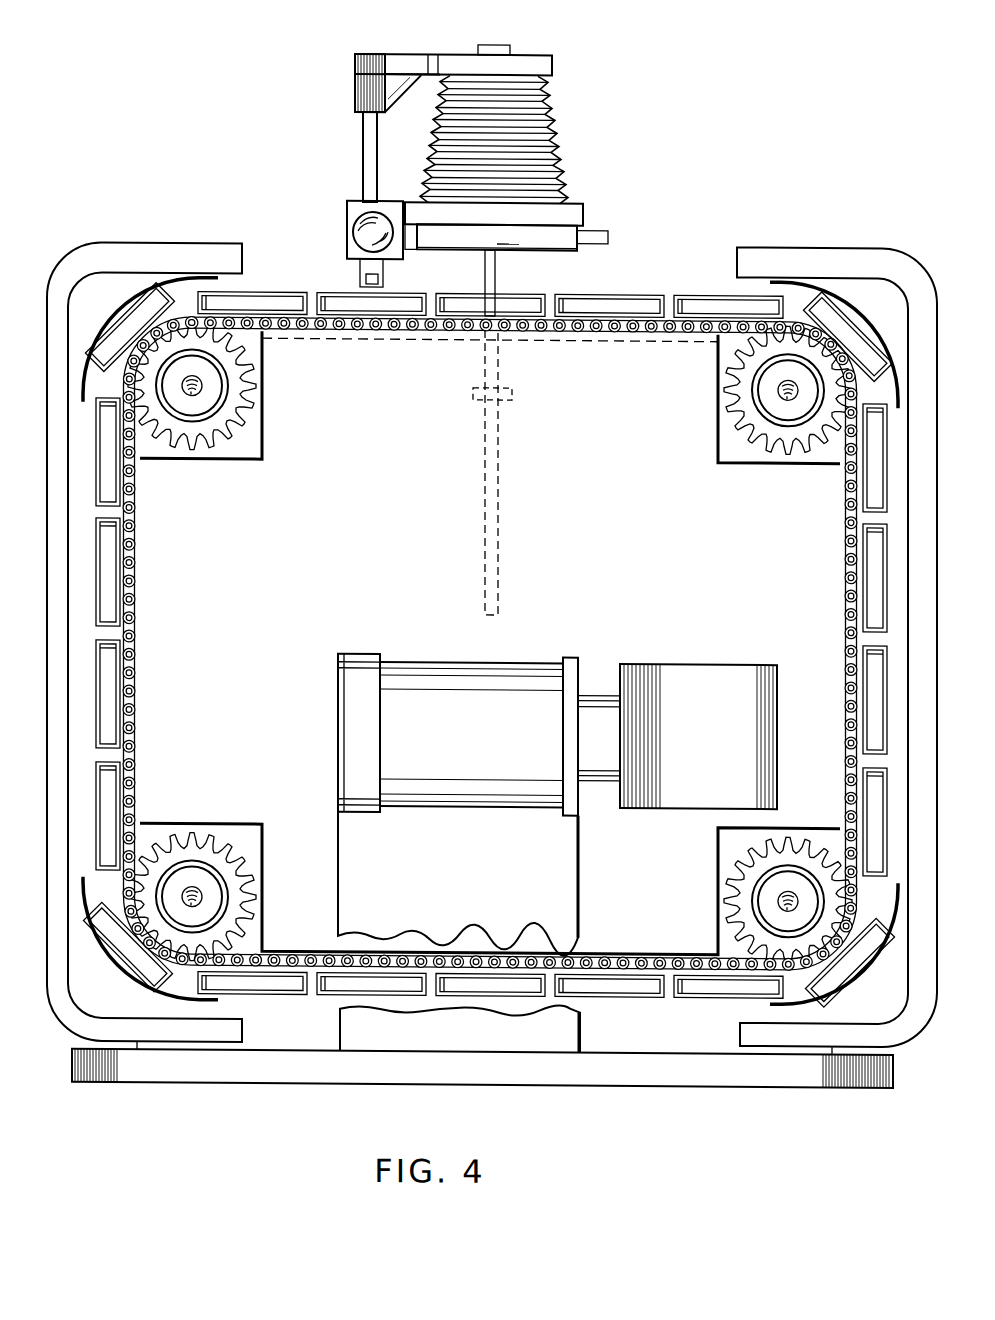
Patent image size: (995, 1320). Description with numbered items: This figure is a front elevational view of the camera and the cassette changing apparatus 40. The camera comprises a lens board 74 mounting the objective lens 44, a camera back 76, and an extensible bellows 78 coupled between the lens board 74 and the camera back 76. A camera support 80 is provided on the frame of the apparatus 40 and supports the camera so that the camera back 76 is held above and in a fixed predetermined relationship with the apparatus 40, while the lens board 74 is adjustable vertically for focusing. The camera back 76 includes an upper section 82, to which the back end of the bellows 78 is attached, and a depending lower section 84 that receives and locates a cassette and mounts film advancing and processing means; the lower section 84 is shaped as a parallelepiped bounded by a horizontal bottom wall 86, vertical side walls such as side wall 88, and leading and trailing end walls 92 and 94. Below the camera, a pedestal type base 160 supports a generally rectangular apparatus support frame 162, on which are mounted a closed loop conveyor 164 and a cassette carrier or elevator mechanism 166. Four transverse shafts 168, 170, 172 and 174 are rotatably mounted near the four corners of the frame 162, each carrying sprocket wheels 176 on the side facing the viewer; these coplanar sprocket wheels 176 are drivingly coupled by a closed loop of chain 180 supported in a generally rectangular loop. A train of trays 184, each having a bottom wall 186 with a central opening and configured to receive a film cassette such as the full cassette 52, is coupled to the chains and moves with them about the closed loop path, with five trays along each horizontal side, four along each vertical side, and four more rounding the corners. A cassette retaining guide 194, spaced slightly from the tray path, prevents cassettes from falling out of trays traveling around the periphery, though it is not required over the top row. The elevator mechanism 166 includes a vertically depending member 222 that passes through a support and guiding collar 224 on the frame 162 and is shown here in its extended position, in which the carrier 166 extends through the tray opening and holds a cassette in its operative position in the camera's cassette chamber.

The cassette changing apparatus 40 is at (500, 632).
The objective lens 44 is at (494, 45).
The full cassette 52 is at (345, 302).
The lens board 74 is at (552, 62).
The camera back 76 is at (527, 227).
The extensible bellows 78 is at (555, 153).
The camera support 80 is at (347, 207).
The upper section 82 is at (584, 206).
The lower section 84 is at (575, 250).
The bottom wall 86 is at (545, 250).
The side wall 88 is at (508, 236).
The leading end wall 92 is at (588, 243).
The trailing end wall 94 is at (409, 238).
The pedestal type base 160 is at (722, 1080).
The apparatus support frame 162 is at (914, 1022).
The closed loop conveyor 164 is at (836, 653).
The cassette carrier or elevator mechanism 166 is at (505, 512).
The transverse shaft 168 is at (200, 391).
The transverse shaft 170 is at (776, 390).
The transverse shaft 172 is at (780, 899).
The transverse shaft 174 is at (204, 894).
The sprocket wheel 176 is at (200, 440).
The chain 180 is at (136, 652).
The tray 184 is at (650, 292).
The bottom wall 186 is at (710, 302).
The cassette retaining guide 194 is at (108, 320).
The vertically depending member 222 is at (486, 277).
The support and guiding collar 224 is at (478, 388).